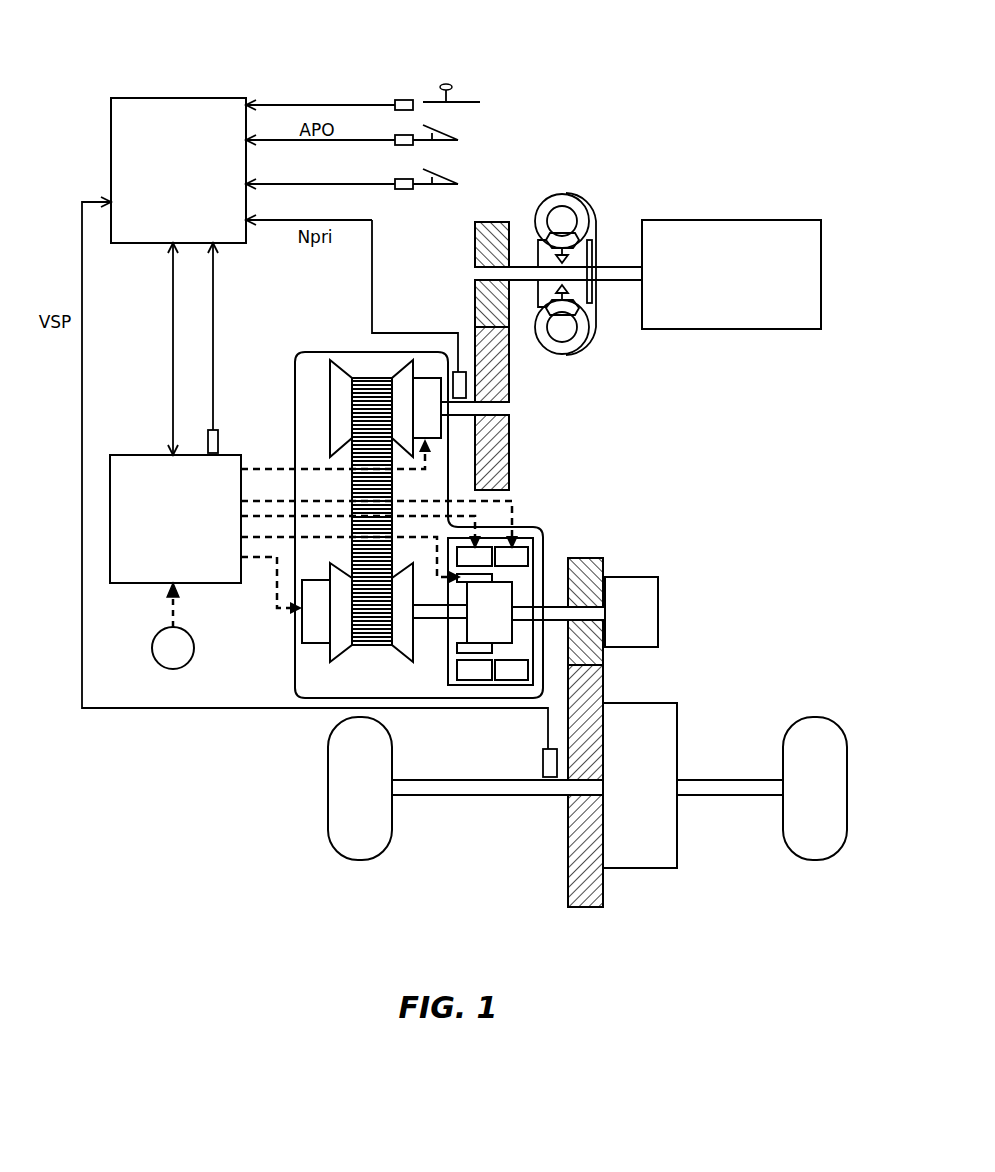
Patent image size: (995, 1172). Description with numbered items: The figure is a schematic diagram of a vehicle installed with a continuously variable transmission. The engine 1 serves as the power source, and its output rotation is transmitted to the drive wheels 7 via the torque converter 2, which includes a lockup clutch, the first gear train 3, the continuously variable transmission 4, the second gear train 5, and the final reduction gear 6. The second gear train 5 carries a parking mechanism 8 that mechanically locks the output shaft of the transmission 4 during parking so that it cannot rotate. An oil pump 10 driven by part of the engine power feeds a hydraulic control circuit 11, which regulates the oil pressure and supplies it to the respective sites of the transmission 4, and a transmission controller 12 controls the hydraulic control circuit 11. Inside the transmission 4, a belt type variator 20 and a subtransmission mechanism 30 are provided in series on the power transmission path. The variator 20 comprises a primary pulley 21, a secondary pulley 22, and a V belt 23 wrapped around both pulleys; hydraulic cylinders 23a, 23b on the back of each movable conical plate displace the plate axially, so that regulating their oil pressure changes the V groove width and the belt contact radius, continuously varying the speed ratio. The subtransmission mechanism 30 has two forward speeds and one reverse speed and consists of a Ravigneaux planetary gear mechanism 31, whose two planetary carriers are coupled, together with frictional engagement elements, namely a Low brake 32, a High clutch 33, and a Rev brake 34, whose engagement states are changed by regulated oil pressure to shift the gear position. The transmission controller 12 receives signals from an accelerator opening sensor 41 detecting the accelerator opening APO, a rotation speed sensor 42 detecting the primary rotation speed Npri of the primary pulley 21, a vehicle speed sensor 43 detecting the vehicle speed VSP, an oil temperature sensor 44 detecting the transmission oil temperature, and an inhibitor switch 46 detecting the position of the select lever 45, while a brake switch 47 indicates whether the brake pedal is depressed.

The engine 1 is at (808, 233).
The torque converter 2 is at (595, 246).
The first gear train 3 is at (497, 216).
The continuously variable transmission 4 is at (340, 352).
The second gear train 5 is at (586, 914).
The final reduction gear 6 is at (640, 855).
The drive wheels 7 is at (360, 845).
The parking mechanism 8 is at (643, 604).
The oil pump 10 is at (157, 637).
The hydraulic control circuit 11 is at (128, 460).
The transmission controller 12 is at (234, 106).
The variator 20 is at (309, 380).
The primary pulley 21 is at (363, 366).
The secondary pulley 22 is at (343, 621).
The V belt 23 is at (372, 378).
The hydraulic cylinder 23a is at (423, 390).
The hydraulic cylinder 23b is at (312, 617).
The subtransmission mechanism 30 is at (516, 569).
The Ravigneaux planetary gear mechanism 31 is at (492, 606).
The Low brake 32 is at (478, 557).
The High clutch 33 is at (475, 650).
The Rev brake 34 is at (510, 557).
The accelerator opening sensor 41 is at (406, 143).
The rotation speed sensor 42 is at (460, 385).
The vehicle speed sensor 43 is at (546, 762).
The oil temperature sensor 44 is at (217, 440).
The select lever 45 is at (446, 82).
The inhibitor switch 46 is at (403, 104).
The brake switch 47 is at (406, 187).